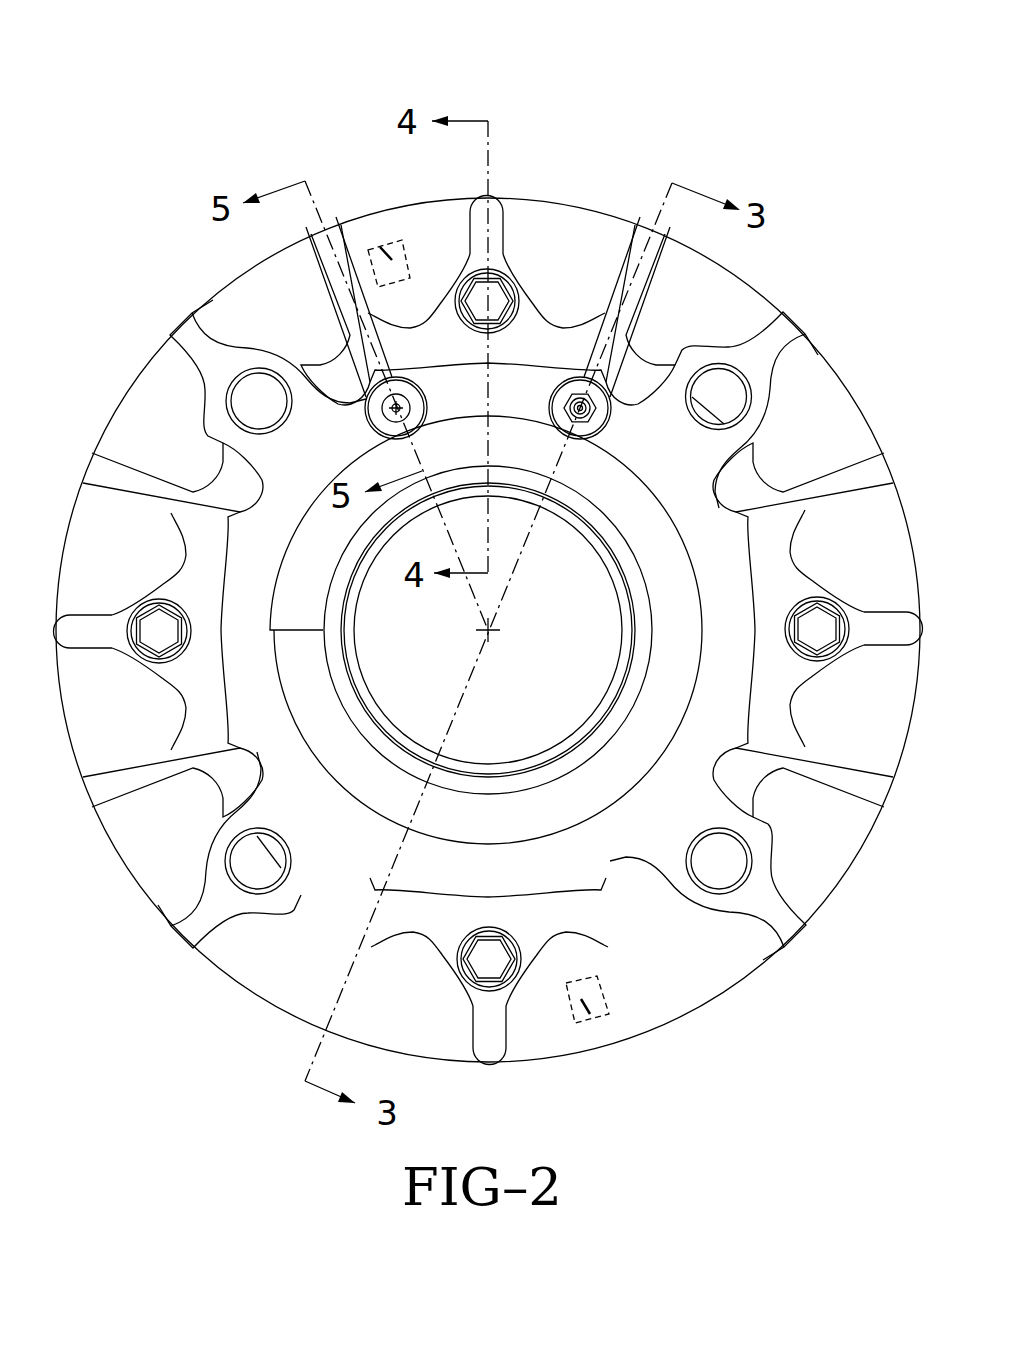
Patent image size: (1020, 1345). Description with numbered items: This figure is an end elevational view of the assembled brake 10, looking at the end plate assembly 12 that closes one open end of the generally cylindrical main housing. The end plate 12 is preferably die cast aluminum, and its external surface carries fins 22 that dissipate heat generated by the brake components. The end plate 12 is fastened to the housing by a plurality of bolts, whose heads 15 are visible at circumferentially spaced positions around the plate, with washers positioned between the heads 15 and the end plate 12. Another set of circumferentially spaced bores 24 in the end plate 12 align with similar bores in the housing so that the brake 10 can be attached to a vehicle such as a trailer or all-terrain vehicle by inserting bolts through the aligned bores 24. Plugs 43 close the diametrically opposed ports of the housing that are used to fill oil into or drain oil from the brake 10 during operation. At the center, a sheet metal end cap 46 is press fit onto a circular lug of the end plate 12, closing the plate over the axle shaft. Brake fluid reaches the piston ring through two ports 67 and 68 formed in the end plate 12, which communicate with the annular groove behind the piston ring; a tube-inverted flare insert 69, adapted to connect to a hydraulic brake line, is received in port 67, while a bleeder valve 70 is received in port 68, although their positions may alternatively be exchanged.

The brake 10 is at (651, 93).
The end plate assembly 12 is at (850, 376).
The heads 15 is at (497, 291).
The fins 22 is at (123, 480).
The bores 24 is at (256, 399).
The plugs 43 is at (380, 244).
The end cap 46 is at (546, 702).
The port 67 is at (377, 425).
The port 68 is at (606, 402).
The tube-inverted flare insert 69 is at (380, 404).
The bleeder valve 70 is at (575, 395).